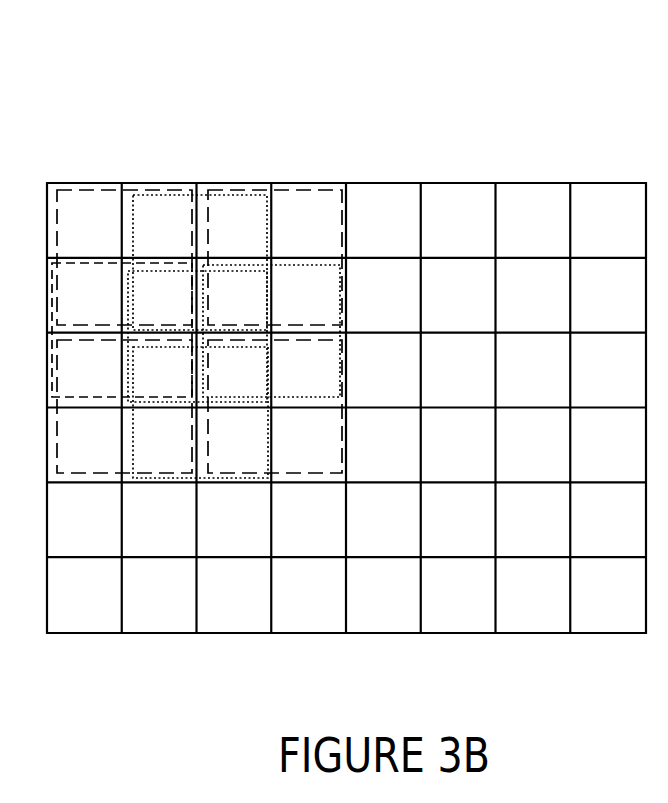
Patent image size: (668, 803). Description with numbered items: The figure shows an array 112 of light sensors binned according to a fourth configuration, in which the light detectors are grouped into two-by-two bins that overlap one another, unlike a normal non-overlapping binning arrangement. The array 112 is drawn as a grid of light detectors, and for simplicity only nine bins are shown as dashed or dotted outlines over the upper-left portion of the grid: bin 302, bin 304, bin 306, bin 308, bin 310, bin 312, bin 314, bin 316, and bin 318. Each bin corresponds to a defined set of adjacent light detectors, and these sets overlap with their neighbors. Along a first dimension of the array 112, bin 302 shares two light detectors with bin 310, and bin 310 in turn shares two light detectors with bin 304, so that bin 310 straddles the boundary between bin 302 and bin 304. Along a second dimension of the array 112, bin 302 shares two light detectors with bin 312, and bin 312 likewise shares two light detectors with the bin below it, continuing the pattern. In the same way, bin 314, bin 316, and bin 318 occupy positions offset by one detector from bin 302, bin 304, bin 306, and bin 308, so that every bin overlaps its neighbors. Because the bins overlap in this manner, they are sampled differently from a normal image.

The array 112 is at (200, 60).
The bin 302 is at (83, 189).
The bin 304 is at (297, 190).
The bin 306 is at (73, 473).
The bin 308 is at (297, 473).
The bin 310 is at (168, 193).
The bin 312 is at (65, 265).
The bin 314 is at (133, 270).
The bin 316 is at (215, 265).
The bin 318 is at (146, 479).